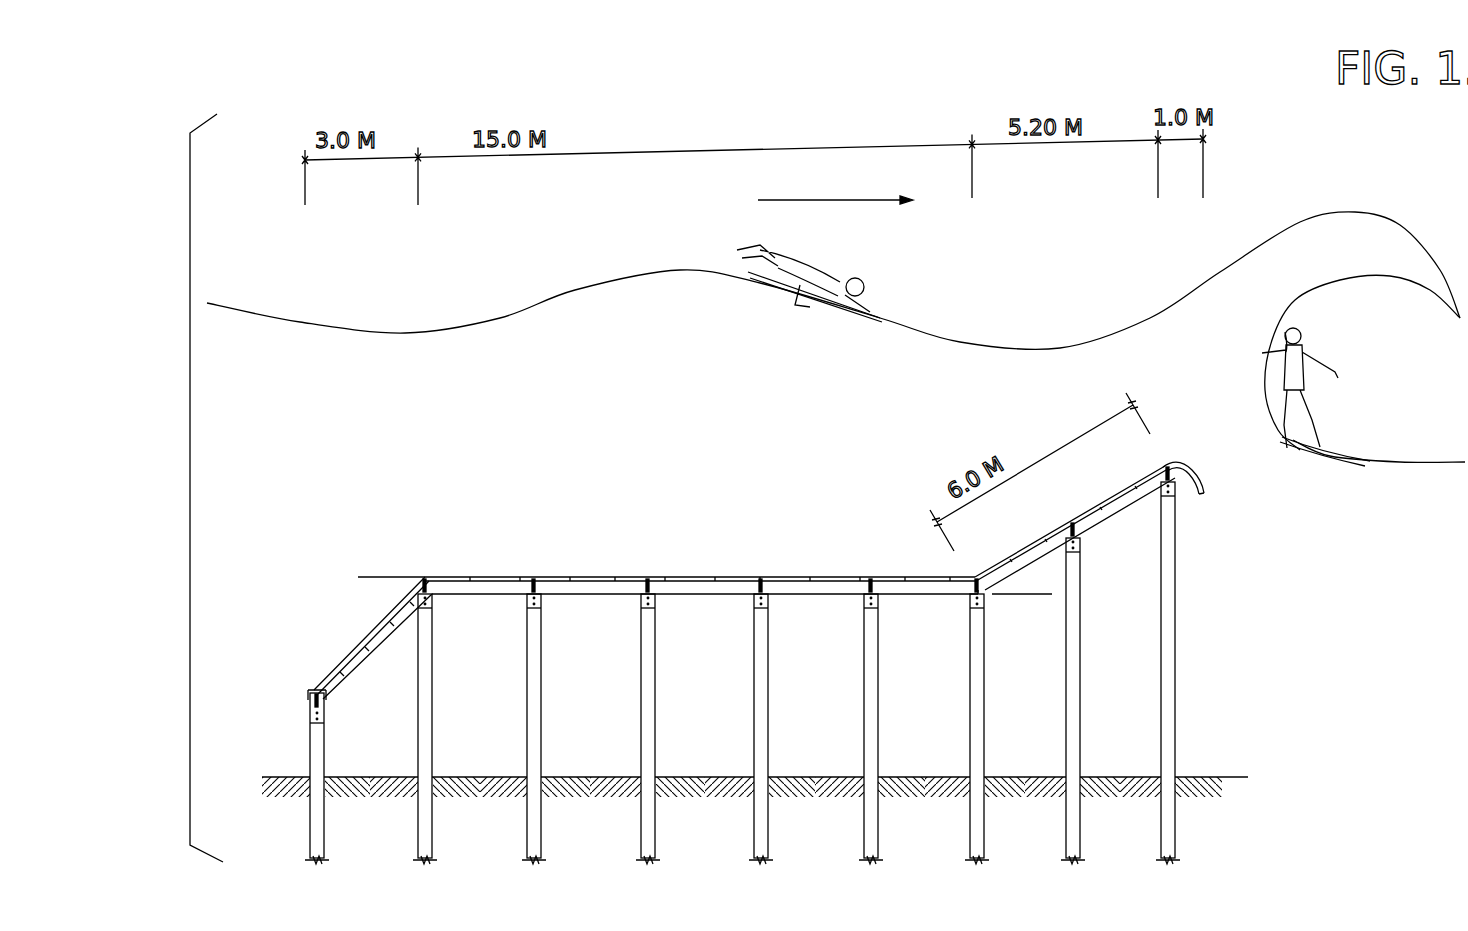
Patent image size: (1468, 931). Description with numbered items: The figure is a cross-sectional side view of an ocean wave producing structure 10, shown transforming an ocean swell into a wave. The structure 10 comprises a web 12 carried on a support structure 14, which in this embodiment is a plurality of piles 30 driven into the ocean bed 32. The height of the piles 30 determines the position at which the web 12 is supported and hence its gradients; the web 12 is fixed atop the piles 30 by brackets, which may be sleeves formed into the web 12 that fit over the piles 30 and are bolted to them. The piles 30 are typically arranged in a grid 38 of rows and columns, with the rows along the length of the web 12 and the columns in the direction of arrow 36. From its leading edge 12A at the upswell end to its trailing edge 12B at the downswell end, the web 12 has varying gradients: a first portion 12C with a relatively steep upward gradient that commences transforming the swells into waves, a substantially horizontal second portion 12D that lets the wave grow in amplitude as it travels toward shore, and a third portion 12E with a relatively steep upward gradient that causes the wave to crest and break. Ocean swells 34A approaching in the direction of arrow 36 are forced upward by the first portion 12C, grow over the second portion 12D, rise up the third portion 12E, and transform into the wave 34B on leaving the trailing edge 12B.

The ocean wave producing structure 10 is at (1375, 190).
The web 12 is at (748, 576).
The leading edge 12A is at (326, 690).
The trailing edge 12B is at (1199, 482).
The first portion 12C is at (358, 642).
The second portion 12D is at (630, 577).
The third portion 12E is at (1058, 528).
The support structure 14 is at (908, 862).
The piles 30 is at (532, 745).
The ocean bed 32 is at (822, 893).
The ocean swells 34A is at (575, 291).
The wave 34B is at (1278, 240).
The arrow 36 is at (812, 200).
The grid 38 is at (1188, 673).